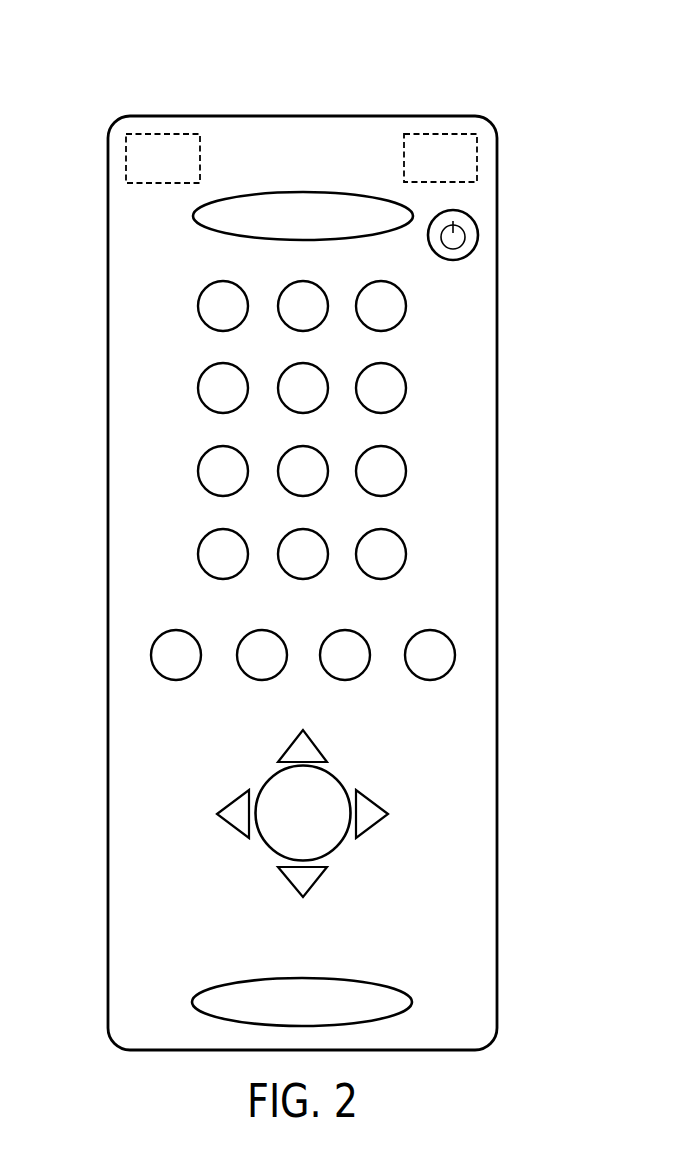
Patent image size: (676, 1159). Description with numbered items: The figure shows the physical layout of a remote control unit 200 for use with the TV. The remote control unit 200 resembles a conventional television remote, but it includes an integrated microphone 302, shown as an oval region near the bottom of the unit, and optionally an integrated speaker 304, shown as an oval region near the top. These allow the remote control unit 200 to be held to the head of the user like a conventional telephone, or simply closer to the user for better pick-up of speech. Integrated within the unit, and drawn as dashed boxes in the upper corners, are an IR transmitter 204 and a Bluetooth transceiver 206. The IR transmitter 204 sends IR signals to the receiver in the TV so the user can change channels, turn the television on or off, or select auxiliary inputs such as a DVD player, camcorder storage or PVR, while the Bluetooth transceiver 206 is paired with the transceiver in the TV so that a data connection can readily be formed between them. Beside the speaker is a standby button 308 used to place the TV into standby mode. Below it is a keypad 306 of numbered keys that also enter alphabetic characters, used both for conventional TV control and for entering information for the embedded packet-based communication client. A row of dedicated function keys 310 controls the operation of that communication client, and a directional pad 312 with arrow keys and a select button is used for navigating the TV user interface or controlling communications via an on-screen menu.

The remote control unit 200 is at (103, 57).
The IR transmitter 204 is at (477, 148).
The Bluetooth transceiver 206 is at (126, 150).
The integrated microphone 302 is at (302, 978).
The integrated speaker 304 is at (302, 191).
The keypad 306 is at (416, 283).
The standby button 308 is at (478, 235).
The dedicated function keys 310 is at (471, 629).
The directional pad 312 is at (400, 732).